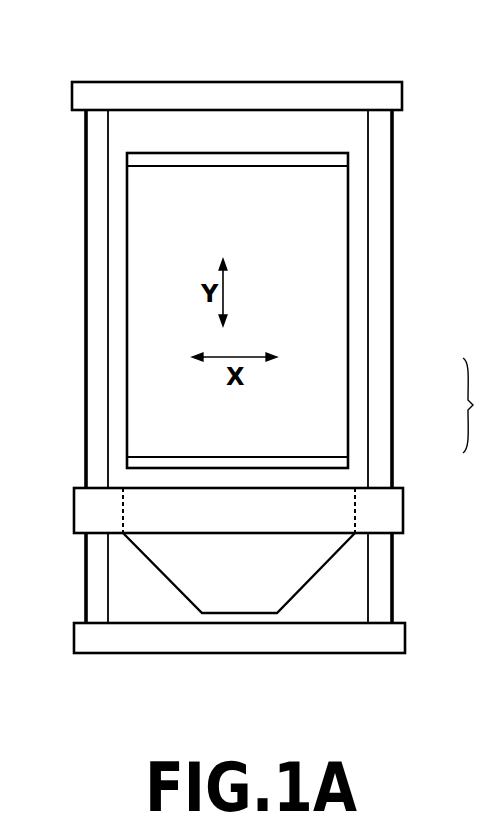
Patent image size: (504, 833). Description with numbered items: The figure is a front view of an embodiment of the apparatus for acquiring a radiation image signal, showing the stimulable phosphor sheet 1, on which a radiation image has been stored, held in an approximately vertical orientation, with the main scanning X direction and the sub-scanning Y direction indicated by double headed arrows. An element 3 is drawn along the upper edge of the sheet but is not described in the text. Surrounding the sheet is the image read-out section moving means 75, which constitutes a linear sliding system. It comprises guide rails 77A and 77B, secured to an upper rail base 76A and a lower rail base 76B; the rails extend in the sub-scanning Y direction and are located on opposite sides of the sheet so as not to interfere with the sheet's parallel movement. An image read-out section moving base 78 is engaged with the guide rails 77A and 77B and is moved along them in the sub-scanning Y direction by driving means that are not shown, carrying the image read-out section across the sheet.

The stimulable phosphor sheet 1 is at (327, 216).
The top strip of panel 3 is at (318, 157).
The image read-out section moving means 75 is at (483, 477).
The rail base 76A is at (330, 95).
The rail base 76B is at (305, 640).
The guide rail 77A is at (92, 428).
The guide rail 77B is at (386, 418).
The image read-out section moving base 78 is at (330, 503).